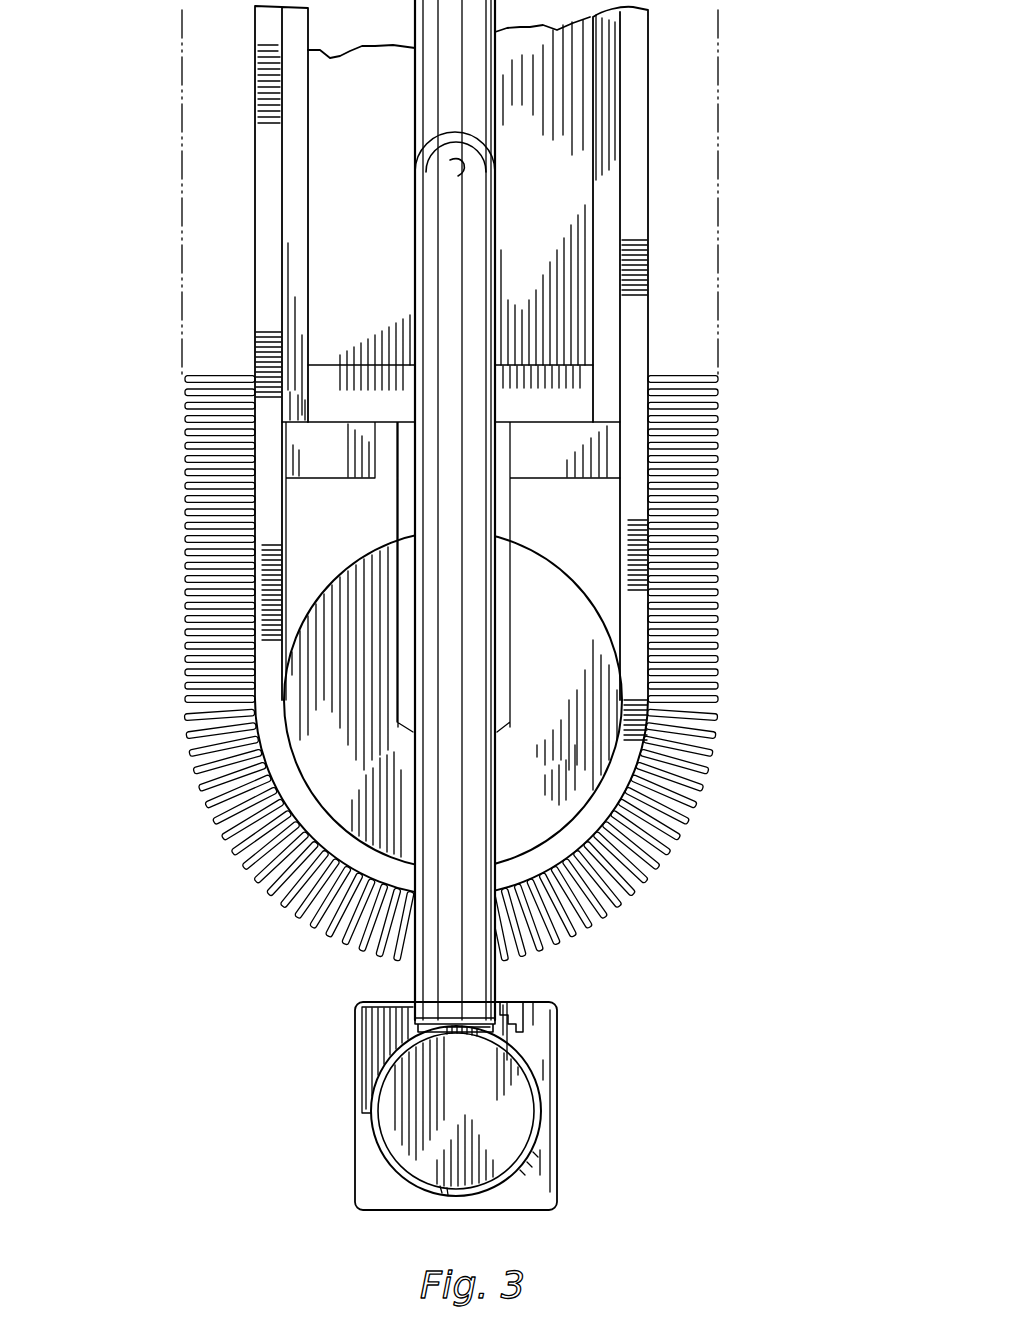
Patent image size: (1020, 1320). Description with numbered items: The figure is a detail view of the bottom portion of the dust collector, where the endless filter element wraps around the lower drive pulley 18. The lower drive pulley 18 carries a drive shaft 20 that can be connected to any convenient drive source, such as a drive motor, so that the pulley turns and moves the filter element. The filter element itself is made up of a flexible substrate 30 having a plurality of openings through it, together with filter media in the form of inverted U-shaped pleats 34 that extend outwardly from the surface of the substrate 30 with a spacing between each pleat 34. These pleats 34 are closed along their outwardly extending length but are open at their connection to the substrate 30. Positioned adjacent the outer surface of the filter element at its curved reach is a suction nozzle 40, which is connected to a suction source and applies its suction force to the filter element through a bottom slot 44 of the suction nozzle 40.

The lower drive pulley 18 is at (612, 744).
The drive shaft 20 is at (507, 688).
The flexible substrate 30 is at (632, 338).
The inverted U-shaped pleats 34 is at (717, 542).
The suction nozzle 40 is at (543, 1152).
The bottom slot 44 is at (520, 1028).